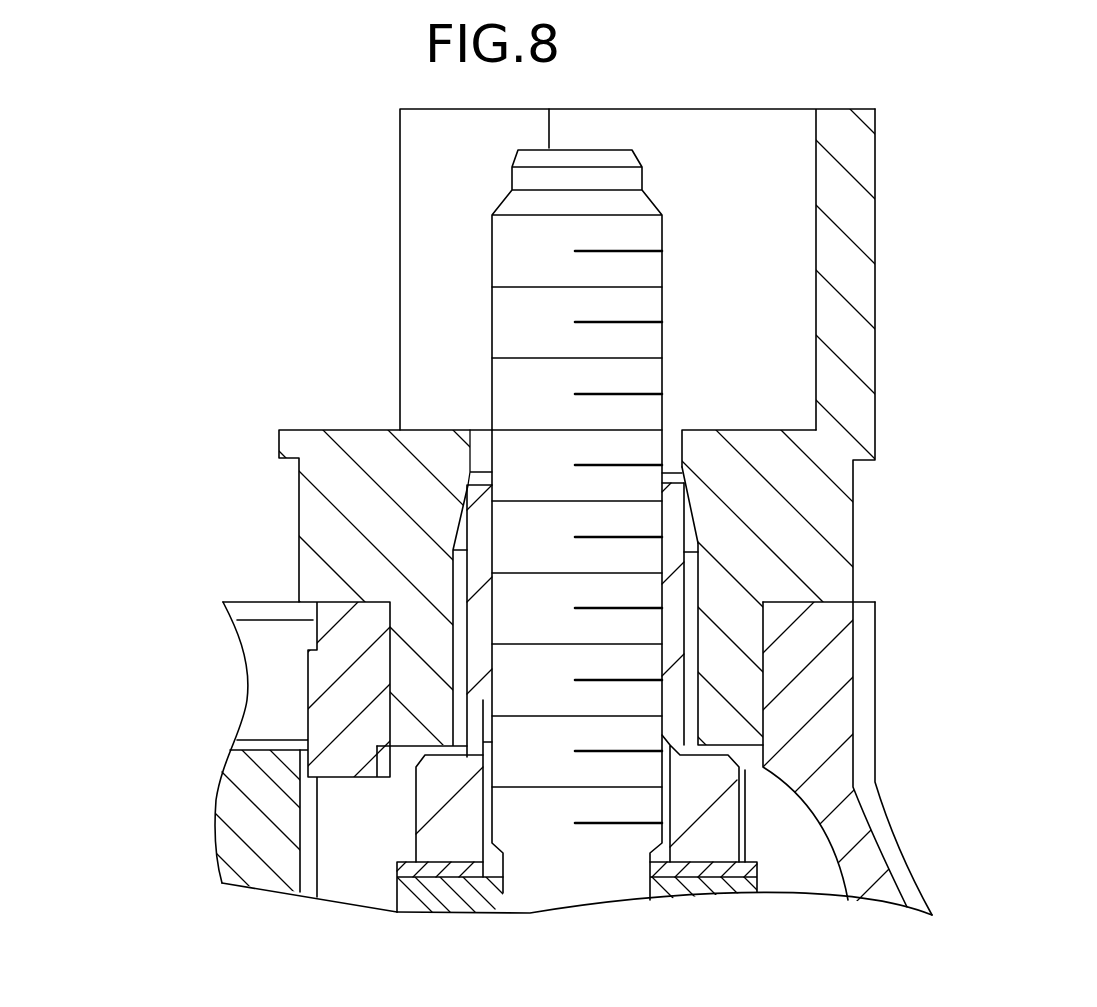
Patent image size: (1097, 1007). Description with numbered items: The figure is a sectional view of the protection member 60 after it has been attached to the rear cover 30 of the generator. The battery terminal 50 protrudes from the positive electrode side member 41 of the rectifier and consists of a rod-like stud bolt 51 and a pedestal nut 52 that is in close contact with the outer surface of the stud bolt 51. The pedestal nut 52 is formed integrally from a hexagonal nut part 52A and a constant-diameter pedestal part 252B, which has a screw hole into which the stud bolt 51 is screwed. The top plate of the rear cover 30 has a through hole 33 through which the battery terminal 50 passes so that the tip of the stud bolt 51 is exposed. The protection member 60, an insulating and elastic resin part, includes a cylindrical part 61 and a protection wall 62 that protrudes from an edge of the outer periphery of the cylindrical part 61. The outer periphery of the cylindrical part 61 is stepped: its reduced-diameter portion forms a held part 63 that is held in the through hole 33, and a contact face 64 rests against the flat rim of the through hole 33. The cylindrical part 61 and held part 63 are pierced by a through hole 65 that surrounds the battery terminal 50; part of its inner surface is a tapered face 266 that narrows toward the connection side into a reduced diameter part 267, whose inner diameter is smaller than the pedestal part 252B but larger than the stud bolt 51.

The rear cover 30 is at (875, 740).
The through hole 33 is at (750, 690).
The positive electrode side member 41 is at (397, 903).
The battery terminal 50 is at (396, 510).
The stud bolt 51 is at (493, 703).
The pedestal nut 52 is at (419, 806).
The pedestal part 252B is at (468, 722).
The hexagonal nut part 52A is at (415, 800).
The protection member 60 is at (576, 427).
The cylindrical part 61 is at (299, 523).
The protection wall 62 is at (875, 233).
The held part 63 is at (387, 632).
The contact face 64 is at (838, 602).
The through hole 65 is at (457, 572).
The tapered face 266 is at (692, 530).
The reduced diameter part 267 is at (684, 446).